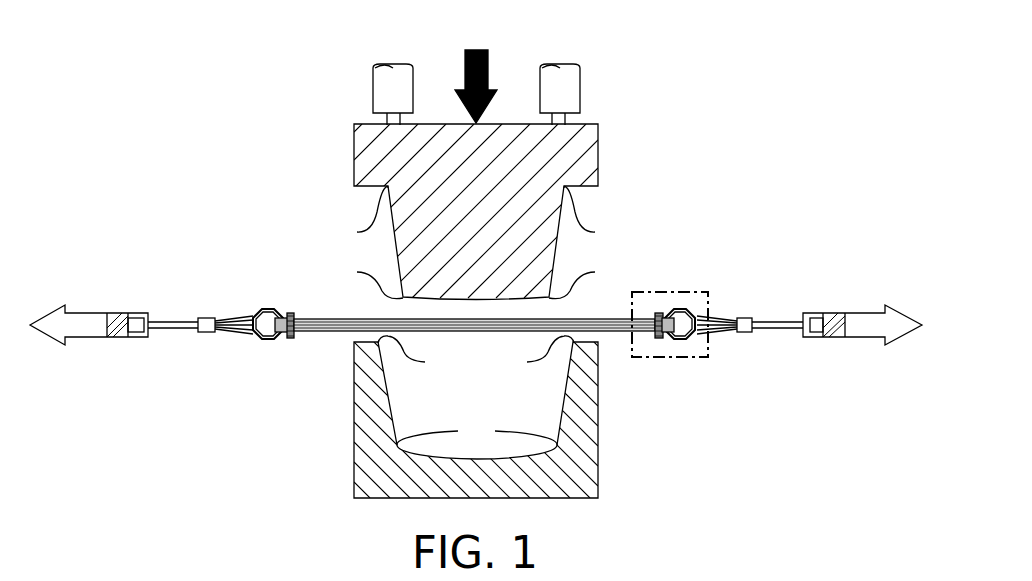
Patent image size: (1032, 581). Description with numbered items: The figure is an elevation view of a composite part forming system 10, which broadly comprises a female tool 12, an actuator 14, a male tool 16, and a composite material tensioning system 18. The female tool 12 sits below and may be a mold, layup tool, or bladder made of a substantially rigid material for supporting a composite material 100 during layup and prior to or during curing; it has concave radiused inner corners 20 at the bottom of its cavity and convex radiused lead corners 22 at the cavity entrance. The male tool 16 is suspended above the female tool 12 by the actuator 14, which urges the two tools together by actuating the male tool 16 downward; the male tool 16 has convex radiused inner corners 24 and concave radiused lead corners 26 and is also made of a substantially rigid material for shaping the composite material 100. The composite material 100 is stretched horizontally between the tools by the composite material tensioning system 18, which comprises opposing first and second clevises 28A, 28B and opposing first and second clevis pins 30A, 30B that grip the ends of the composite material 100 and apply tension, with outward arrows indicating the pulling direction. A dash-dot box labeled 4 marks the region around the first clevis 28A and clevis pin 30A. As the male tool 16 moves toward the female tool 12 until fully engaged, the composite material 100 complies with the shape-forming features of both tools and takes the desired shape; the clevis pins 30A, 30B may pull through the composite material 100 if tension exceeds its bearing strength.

The composite part forming system 10 is at (197, 47).
The female tool 12 is at (312, 417).
The actuator 14 is at (368, 72).
The male tool 16 is at (312, 175).
The composite material tensioning system 18 is at (130, 278).
The concave radiused inner corners 20 is at (477, 429).
The convex radiused lead corners 22 is at (476, 358).
The convex radiused inner corners 24 is at (473, 279).
The concave radiused lead corners 26 is at (473, 218).
The first clevis 28A is at (694, 343).
The second clevis 28B is at (257, 311).
The first clevis pin 30A is at (660, 314).
The second clevis pin 30B is at (290, 312).
The composite material 100 is at (333, 332).
The detail region (FIG. 4) 4 is at (708, 292).